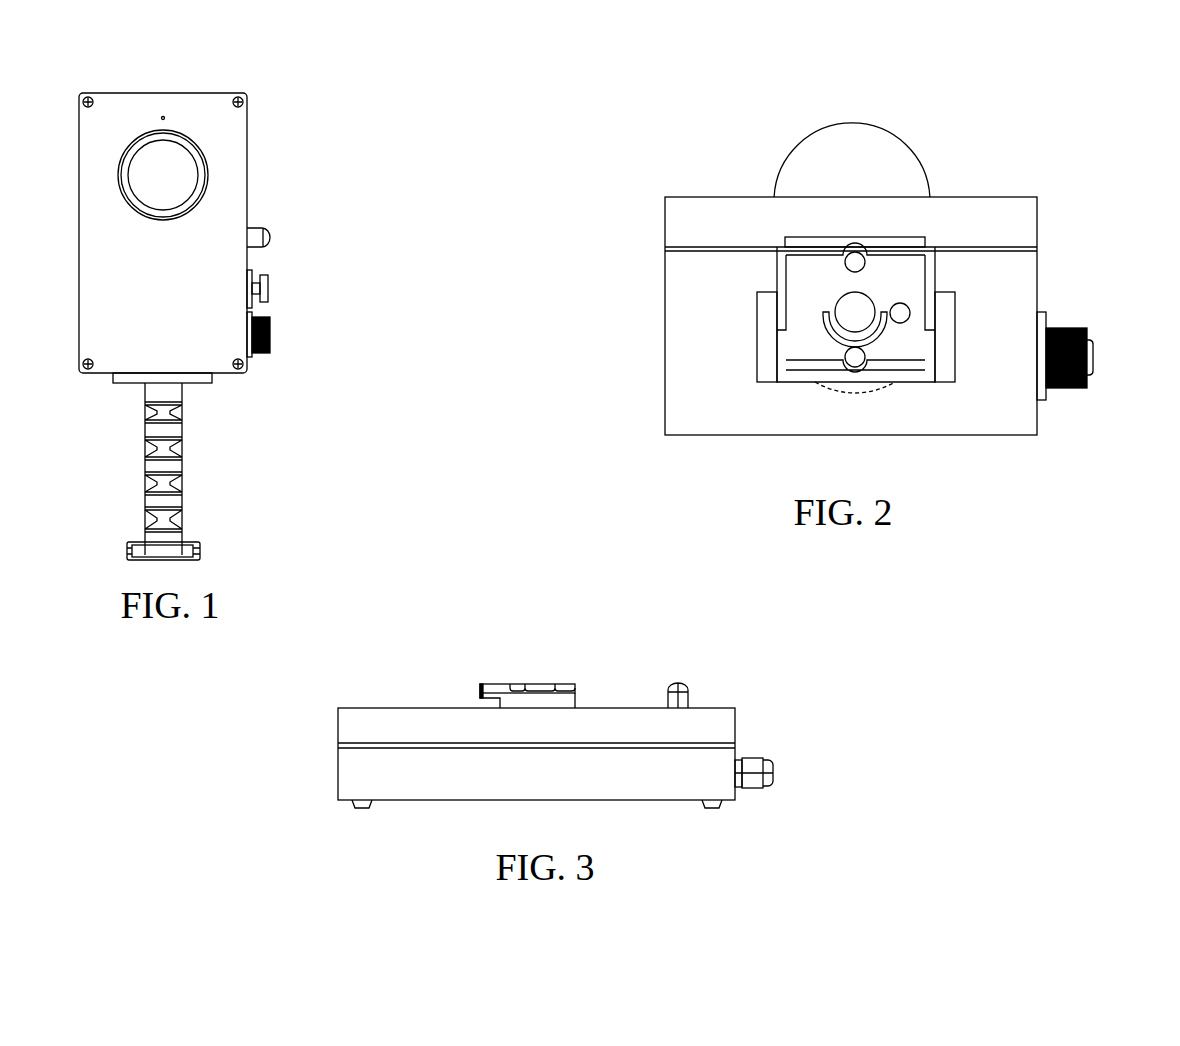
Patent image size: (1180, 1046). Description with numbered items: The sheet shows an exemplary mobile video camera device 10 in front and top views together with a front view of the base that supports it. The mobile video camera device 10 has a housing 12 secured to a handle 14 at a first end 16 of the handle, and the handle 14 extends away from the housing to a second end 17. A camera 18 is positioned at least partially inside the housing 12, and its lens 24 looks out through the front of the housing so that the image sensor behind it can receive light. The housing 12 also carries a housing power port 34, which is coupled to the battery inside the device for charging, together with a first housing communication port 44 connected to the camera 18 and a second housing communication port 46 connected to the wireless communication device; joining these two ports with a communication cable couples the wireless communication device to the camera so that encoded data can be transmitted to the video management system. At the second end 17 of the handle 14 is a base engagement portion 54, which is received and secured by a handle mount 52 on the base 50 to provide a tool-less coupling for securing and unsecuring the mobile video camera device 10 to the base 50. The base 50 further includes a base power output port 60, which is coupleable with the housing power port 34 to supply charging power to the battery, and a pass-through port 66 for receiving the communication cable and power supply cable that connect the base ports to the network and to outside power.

In FIG. 1, the mobile video camera device 10 is at (270, 78).
In FIG. 2, the mobile video camera device 10 is at (1043, 117).
In FIG. 1, the housing 12 is at (90, 136).
In FIG. 2, the housing 12 is at (1025, 275).
In FIG. 1, the handle 14 is at (176, 432).
In FIG. 1, the first end 16 is at (176, 392).
In FIG. 1, the second end 17 is at (176, 535).
In FIG. 1, the camera 18 is at (204, 173).
In FIG. 2, the lens 24 is at (852, 115).
In FIG. 1, the housing power port 34 is at (268, 288).
In FIG. 1, the first housing communication port 44 is at (271, 238).
In FIG. 1, the second housing communication port 46 is at (270, 337).
In FIG. 2, the second housing communication port 46 is at (1093, 356).
In FIG. 3, the base 50 is at (605, 617).
In FIG. 3, the handle mount 52 is at (562, 683).
In FIG. 1, the base engagement portion 54 is at (130, 552).
In FIG. 2, the base engagement portion 54 is at (787, 282).
In FIG. 3, the base power output port 60 is at (679, 683).
In FIG. 3, the pass-through port 66 is at (757, 790).